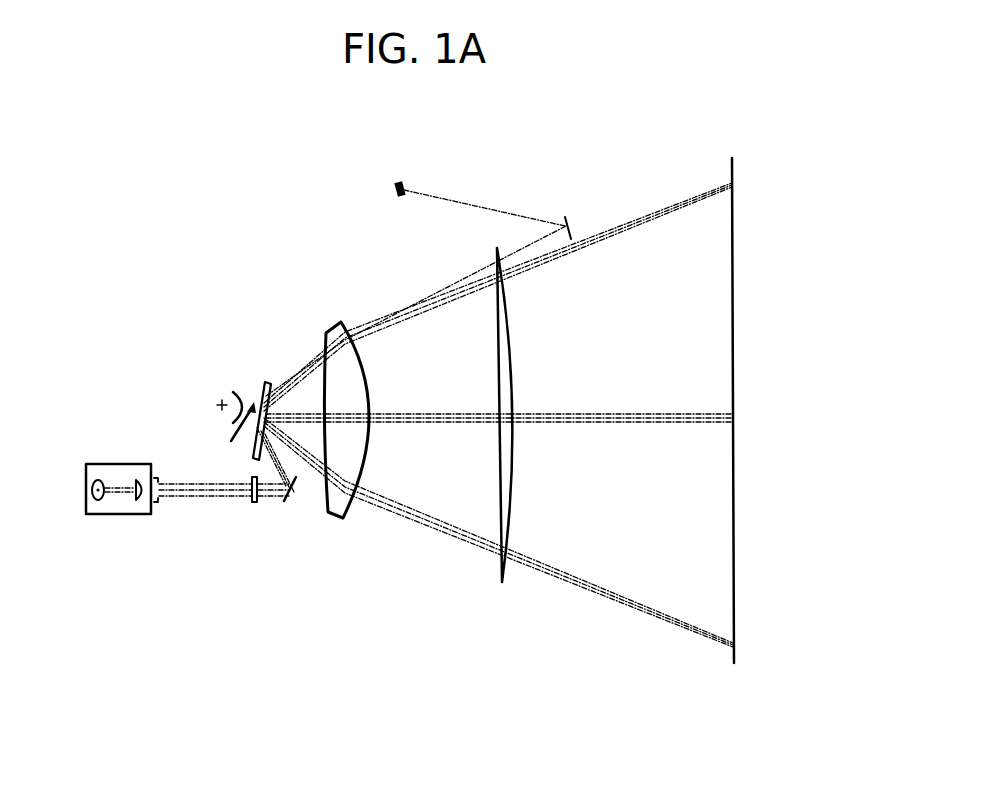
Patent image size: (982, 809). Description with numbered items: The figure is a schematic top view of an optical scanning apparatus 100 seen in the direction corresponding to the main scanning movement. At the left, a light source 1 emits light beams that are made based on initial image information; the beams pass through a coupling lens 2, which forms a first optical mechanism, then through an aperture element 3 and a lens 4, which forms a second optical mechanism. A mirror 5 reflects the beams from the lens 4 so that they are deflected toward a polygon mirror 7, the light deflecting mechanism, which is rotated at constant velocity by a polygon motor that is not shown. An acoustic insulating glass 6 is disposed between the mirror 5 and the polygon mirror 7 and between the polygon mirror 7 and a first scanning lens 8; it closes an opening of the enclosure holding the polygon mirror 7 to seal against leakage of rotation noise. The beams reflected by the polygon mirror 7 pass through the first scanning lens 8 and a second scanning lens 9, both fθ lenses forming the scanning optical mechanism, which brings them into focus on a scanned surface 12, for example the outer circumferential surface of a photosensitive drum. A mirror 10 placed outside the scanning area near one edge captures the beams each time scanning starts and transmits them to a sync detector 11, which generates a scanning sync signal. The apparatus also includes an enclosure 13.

The optical scanning apparatus 100 is at (176, 211).
The light source 1 is at (98, 500).
The coupling lens 2 is at (139, 500).
The aperture element 3 is at (156, 500).
The lens 4 is at (254, 503).
The mirror 5 is at (291, 503).
The acoustic insulating glass 6 is at (256, 450).
The polygon mirror 7 is at (233, 441).
The first scanning lens 8 is at (345, 519).
The second scanning lens 9 is at (506, 583).
The mirror 10 is at (571, 228).
The sync detector 11 is at (398, 198).
The scanned surface 12 is at (732, 170).
The enclosure 13 is at (102, 464).